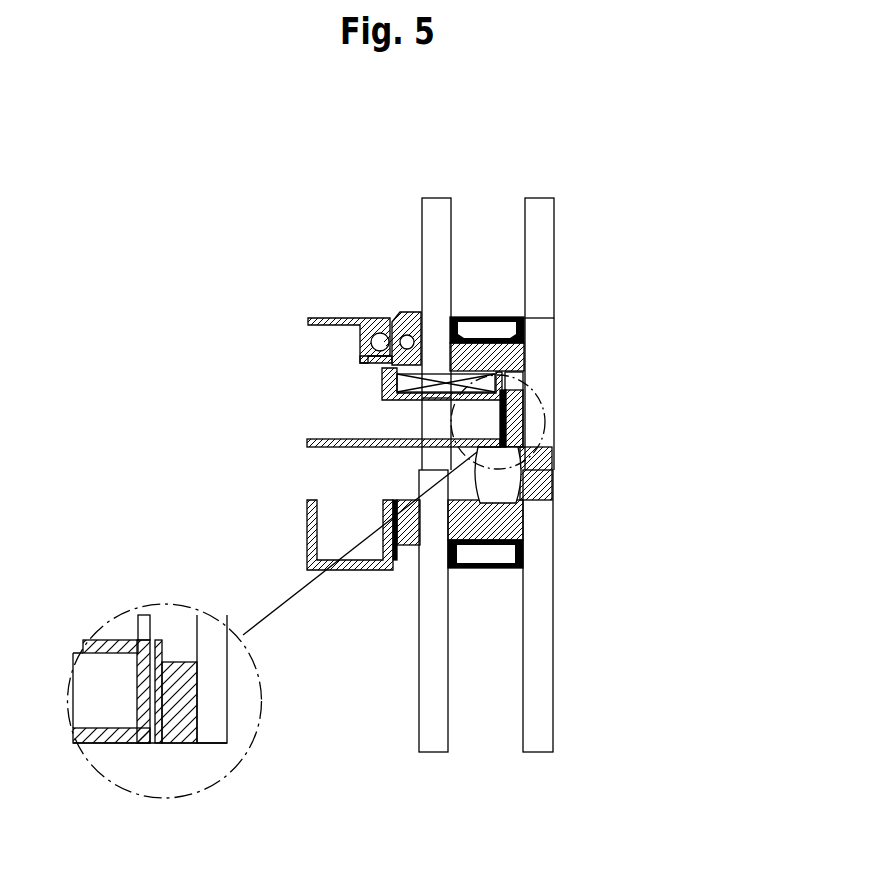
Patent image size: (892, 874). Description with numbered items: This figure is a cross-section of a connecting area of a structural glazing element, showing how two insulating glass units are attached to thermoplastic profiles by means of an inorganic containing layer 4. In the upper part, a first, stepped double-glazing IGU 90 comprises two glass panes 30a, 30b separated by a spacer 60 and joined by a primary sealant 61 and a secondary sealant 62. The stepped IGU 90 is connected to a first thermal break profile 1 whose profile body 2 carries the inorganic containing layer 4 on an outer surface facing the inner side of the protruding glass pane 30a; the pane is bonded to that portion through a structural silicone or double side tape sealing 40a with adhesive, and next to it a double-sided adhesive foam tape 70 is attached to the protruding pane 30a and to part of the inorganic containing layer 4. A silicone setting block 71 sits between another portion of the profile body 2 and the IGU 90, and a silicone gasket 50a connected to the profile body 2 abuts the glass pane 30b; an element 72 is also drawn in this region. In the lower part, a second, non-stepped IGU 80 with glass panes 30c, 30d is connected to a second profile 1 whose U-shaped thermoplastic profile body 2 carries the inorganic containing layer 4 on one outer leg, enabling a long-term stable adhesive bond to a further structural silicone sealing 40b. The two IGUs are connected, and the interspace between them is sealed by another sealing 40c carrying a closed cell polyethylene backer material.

The thermal break profile 1 is at (312, 448).
The profile body 2 is at (320, 325).
The inorganic containing layer 4 is at (494, 413).
The glass pane 30a is at (540, 208).
The glass pane 30b is at (432, 208).
The glass pane 30c is at (535, 732).
The glass pane 30d is at (433, 737).
The structural silicone or structural double side tape sealing 40a is at (523, 425).
The structural silicone sealing 40b is at (410, 566).
The sealing 40c is at (535, 468).
The gasket 50a is at (408, 322).
The spacer 60 is at (482, 318).
The primary sealant 61 is at (524, 318).
The secondary sealant 62 is at (524, 352).
The double-sided adhesive foam tape 70 is at (498, 487).
The silicone setting block 71 is at (382, 380).
The elastic member 72 is at (523, 386).
The second double-glazing IGU 80 is at (565, 720).
The first double-glazing IGU 90 is at (575, 218).